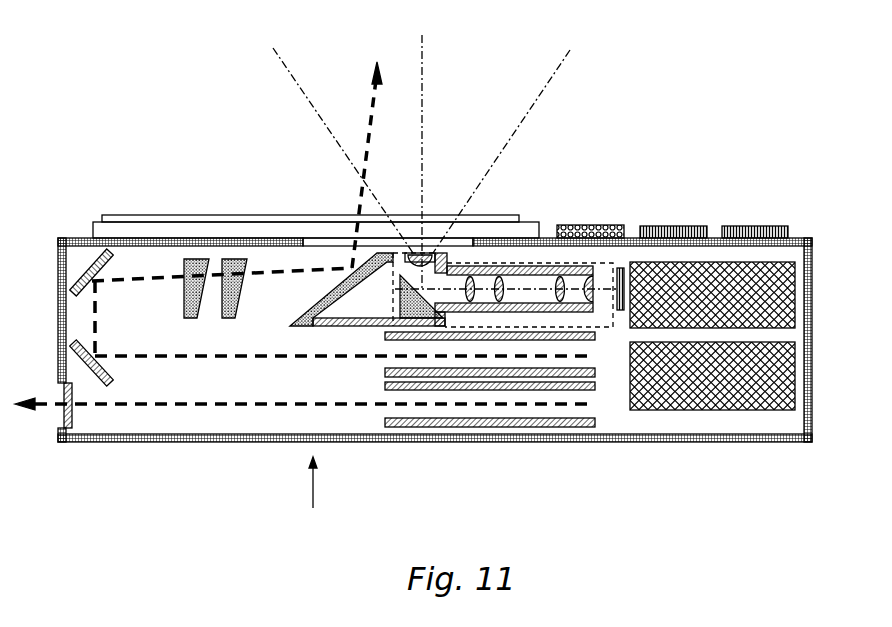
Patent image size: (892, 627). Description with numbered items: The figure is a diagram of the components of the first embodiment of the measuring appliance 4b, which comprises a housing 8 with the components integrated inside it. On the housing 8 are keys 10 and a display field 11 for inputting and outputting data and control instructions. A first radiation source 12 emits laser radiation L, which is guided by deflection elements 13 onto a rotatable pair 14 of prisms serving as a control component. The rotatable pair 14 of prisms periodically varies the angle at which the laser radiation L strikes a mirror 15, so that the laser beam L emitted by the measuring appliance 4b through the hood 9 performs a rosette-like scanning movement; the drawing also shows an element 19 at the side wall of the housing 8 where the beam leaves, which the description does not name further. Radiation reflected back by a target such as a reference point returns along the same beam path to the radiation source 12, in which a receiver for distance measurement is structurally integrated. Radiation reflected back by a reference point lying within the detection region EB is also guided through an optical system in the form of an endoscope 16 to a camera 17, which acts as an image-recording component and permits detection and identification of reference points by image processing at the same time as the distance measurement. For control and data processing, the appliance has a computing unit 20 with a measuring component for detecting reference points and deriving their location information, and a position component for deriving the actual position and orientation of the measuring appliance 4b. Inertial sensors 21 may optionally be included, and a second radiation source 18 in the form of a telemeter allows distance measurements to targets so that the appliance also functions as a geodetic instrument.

The housing 8 is at (415, 440).
The hood 9 is at (148, 220).
The keys 10 is at (747, 227).
The display field 11 is at (575, 227).
The first radiation source 12 is at (597, 363).
The deflection elements 13 is at (97, 297).
The rotatable pair of prisms 14 is at (229, 259).
The mirror 15 is at (348, 278).
The endoscope 16 is at (592, 263).
The camera 17 is at (622, 268).
The second radiation source 18 is at (510, 430).
The exit window 19 is at (73, 420).
The computing unit 20 is at (753, 313).
The inertial sensors 21 is at (713, 400).
The measuring appliance 4b is at (309, 499).
The laser radiation L is at (367, 149).
The detection region EB is at (437, 162).